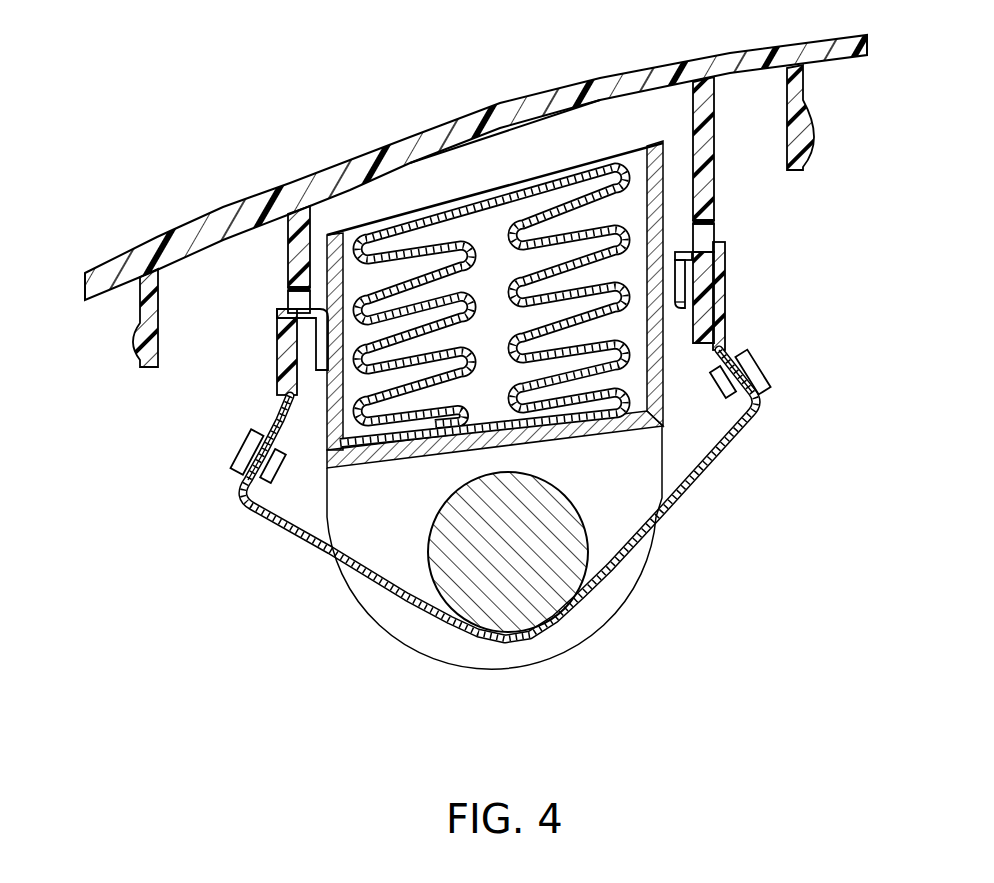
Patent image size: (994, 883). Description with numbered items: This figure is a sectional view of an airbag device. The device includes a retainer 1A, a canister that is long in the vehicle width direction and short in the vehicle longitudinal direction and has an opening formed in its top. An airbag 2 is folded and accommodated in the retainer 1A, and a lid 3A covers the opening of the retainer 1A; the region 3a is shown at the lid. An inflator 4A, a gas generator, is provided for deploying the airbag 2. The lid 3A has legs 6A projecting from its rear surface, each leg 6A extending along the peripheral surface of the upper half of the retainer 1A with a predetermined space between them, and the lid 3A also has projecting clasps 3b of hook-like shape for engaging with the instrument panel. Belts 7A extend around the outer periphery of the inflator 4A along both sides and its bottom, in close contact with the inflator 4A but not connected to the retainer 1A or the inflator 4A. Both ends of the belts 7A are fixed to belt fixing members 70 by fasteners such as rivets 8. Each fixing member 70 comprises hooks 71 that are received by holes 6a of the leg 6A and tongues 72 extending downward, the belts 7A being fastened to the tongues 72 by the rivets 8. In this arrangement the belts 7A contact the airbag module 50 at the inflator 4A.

The lid 3A is at (600, 76).
The lower surface of ceiling panel 3a is at (497, 124).
The projecting clasp 3b is at (134, 365).
The airbag 2 is at (563, 168).
The leg 6A is at (285, 254).
The hole 6a is at (290, 298).
The belt fixing member 70 is at (269, 347).
The hook 71 is at (677, 313).
The tongue 72 is at (276, 412).
The rivet 8 is at (237, 460).
The belt 7A is at (735, 443).
The inflator 4A is at (567, 497).
The retainer 1A is at (660, 549).
The airbag module 50 is at (507, 672).